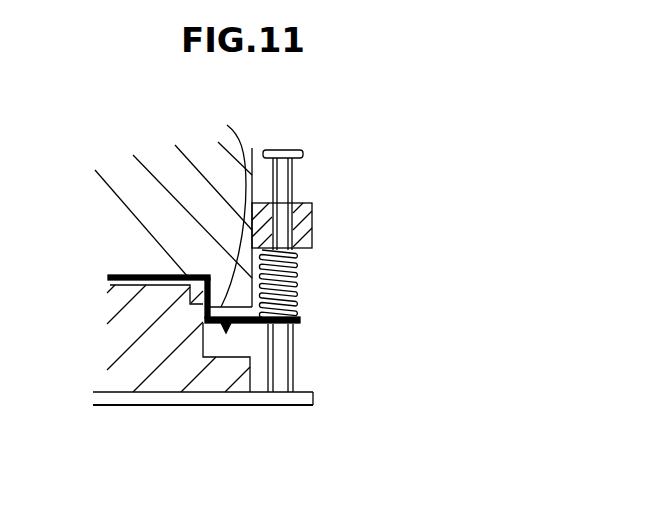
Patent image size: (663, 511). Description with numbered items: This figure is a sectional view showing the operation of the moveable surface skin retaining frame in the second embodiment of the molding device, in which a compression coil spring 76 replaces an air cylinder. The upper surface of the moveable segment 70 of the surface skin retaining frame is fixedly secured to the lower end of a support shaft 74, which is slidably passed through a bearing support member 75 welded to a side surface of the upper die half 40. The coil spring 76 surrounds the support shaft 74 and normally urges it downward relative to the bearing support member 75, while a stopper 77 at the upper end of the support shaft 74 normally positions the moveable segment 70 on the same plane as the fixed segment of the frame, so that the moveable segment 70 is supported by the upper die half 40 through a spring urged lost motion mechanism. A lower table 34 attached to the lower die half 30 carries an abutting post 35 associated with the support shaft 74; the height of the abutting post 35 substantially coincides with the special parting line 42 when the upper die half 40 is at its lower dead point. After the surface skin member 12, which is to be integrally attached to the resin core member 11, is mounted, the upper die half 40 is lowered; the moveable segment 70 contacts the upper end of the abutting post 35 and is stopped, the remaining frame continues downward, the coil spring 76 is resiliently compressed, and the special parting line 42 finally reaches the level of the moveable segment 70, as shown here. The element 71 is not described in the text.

The resin core member 11 is at (110, 290).
The surface skin member 12 is at (130, 273).
The lower die half 30 is at (115, 347).
The lower table 34 is at (198, 402).
The abutting post 35 is at (293, 350).
The upper die half 40 is at (147, 203).
The special parting line 42 is at (223, 208).
The moveable segment of the surface skin retaining frame 70 is at (300, 318).
The projection 71 is at (230, 333).
The support shaft 74 is at (293, 178).
The bearing support member 75 is at (305, 227).
The compression coil spring 76 is at (298, 272).
The stopper 77 is at (283, 148).